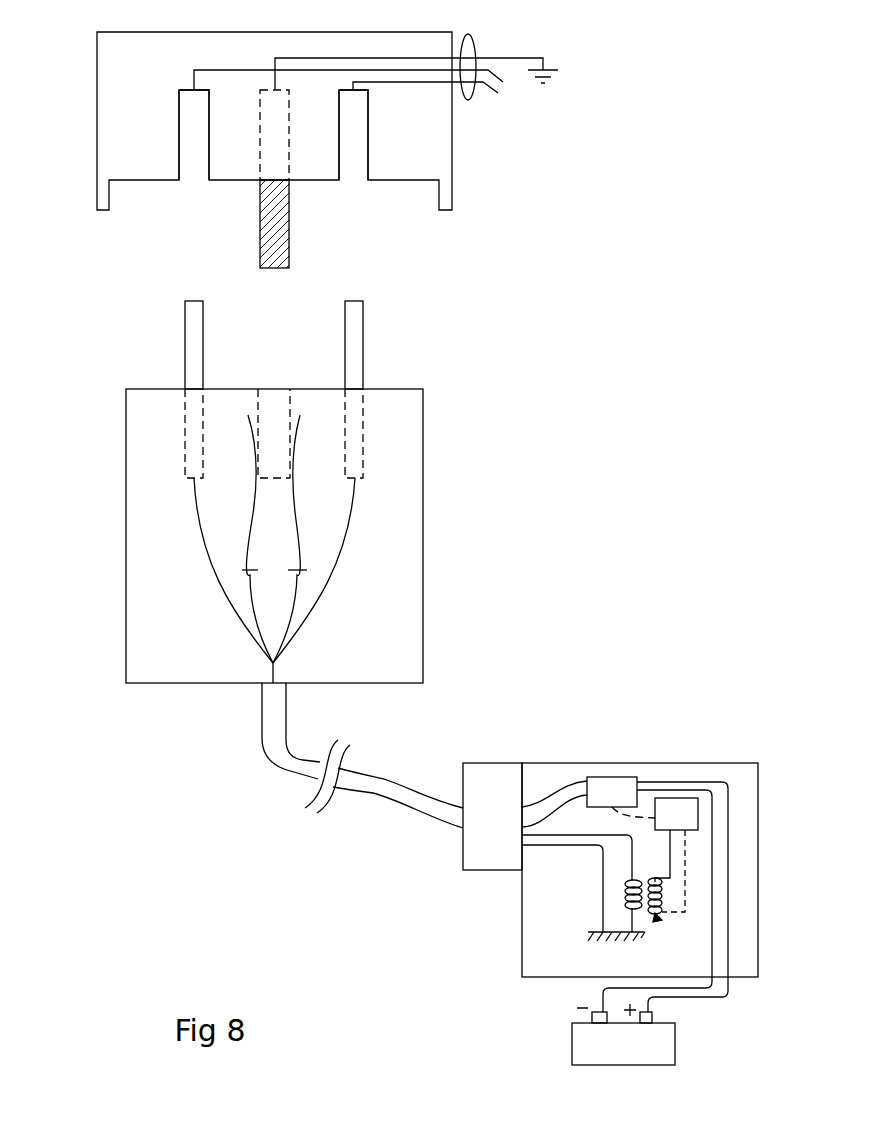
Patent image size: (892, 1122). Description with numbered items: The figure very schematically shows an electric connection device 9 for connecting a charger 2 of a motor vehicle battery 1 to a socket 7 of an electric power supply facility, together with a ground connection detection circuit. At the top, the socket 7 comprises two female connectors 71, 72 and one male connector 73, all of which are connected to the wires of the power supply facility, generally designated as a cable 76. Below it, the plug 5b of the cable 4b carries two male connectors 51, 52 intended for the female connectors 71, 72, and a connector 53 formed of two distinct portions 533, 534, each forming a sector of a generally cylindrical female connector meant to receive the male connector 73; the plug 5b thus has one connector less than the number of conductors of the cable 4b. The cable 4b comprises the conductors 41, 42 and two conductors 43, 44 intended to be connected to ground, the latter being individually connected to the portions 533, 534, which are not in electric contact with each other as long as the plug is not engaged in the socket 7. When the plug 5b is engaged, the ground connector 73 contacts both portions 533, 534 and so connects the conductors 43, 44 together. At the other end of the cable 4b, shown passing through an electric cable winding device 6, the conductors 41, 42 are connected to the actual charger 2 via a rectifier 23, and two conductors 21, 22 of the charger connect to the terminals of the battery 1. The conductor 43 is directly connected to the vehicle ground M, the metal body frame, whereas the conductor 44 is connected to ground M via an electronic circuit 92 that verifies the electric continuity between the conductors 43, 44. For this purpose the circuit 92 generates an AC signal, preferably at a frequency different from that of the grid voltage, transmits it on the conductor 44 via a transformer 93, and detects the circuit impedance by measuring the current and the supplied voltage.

The socket 7 is at (97, 130).
The female connector 71 is at (179, 155).
The female connector 72 is at (368, 155).
The male connector 73 is at (289, 215).
The cable 76 is at (477, 47).
The plug 5b is at (423, 470).
The male connector 51 is at (203, 333).
The male connector 52 is at (363, 333).
The connector 53 is at (277, 410).
The portion of connector 533 is at (248, 513).
The portion of connector 534 is at (298, 543).
The conductor 41 is at (200, 532).
The conductor 42 is at (353, 518).
The ground conductor 43 is at (258, 612).
The ground conductor 44 is at (297, 592).
The electric connection device 9 is at (130, 715).
The cable 4b is at (287, 758).
The electric cable winding device 6 is at (490, 775).
The charger 2 is at (705, 763).
The rectifier 23 is at (617, 787).
The electronic circuit 92 is at (698, 812).
The transformer 93 is at (655, 921).
The ground M is at (603, 942).
The conductor 22 is at (600, 995).
The conductor 21 is at (723, 992).
The battery 1 is at (675, 1050).